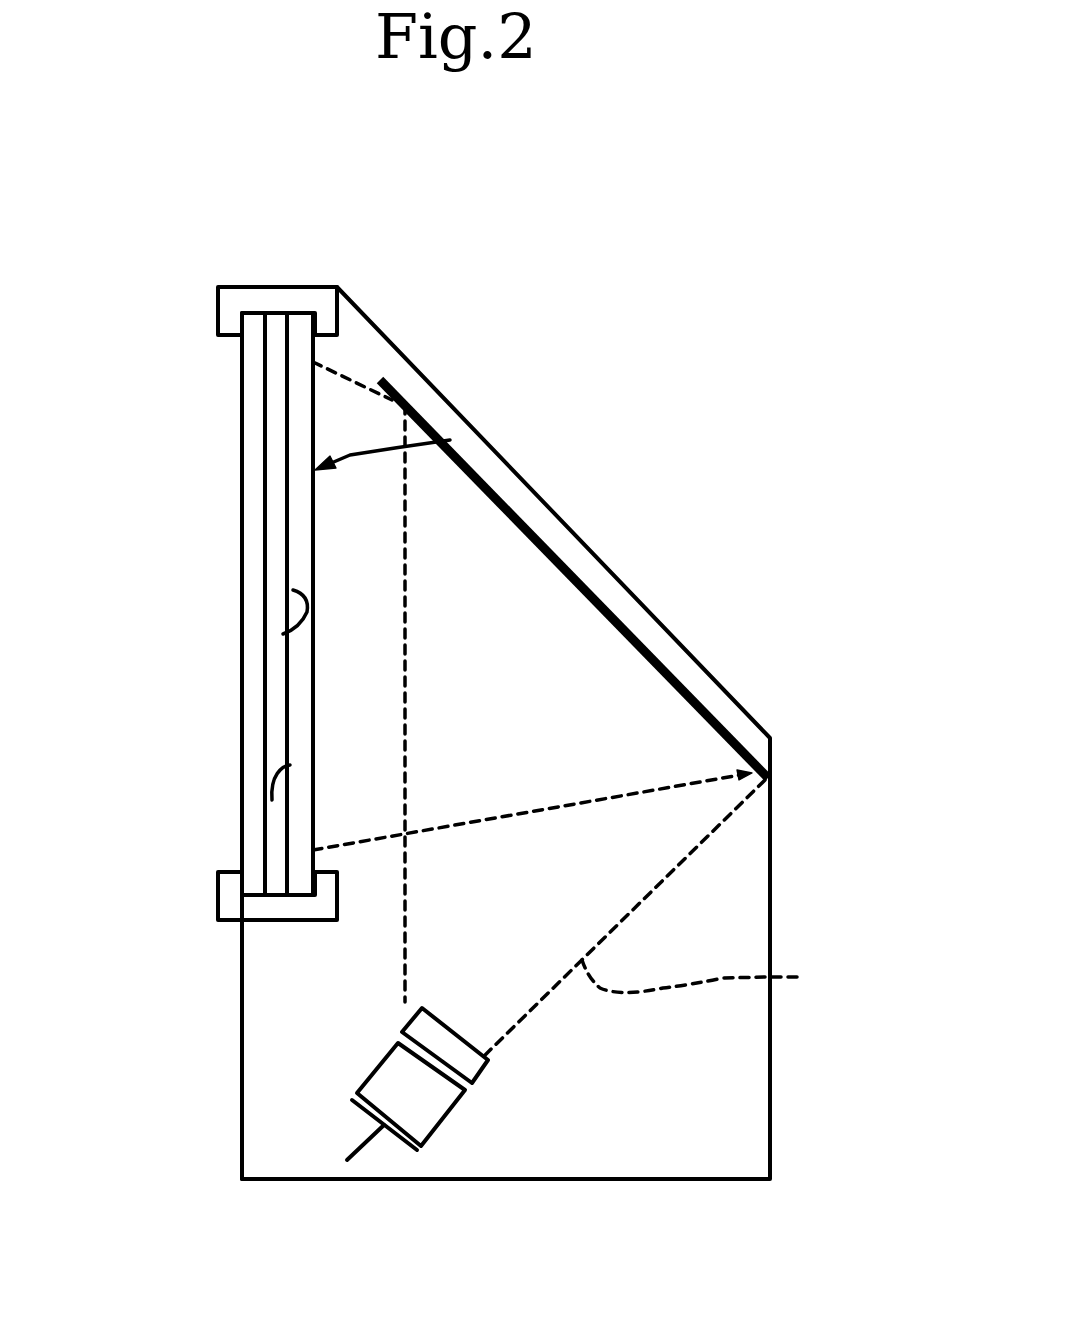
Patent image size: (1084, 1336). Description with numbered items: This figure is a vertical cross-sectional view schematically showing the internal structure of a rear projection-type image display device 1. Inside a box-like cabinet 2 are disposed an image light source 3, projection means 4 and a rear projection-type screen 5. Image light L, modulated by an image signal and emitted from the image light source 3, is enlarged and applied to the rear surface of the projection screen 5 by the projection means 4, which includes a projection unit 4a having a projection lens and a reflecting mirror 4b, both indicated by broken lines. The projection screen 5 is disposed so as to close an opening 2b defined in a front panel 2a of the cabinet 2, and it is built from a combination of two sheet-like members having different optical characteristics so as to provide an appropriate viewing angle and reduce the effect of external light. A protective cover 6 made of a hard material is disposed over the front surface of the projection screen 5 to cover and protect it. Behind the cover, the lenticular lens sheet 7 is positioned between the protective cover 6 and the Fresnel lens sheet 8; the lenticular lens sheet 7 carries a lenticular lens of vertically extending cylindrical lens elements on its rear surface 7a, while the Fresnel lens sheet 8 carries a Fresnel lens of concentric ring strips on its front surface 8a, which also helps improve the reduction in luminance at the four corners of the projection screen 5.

The rear projection-type image display device 1 is at (664, 478).
The cabinet 2 is at (640, 603).
The front panel 2a is at (242, 1003).
The opening 2b is at (275, 880).
The image light source 3 is at (443, 1115).
The projection means 4 is at (690, 897).
The projection unit 4a is at (488, 1073).
The reflecting mirror 4b is at (703, 700).
The rear projection-type screen 5 is at (450, 440).
The protective cover 6 is at (255, 426).
The lenticular lens sheet 7 is at (275, 500).
The rear surface 7a is at (283, 634).
The Fresnel lens sheet 8 is at (300, 697).
The front surface 8a is at (290, 765).
The image light L is at (703, 986).